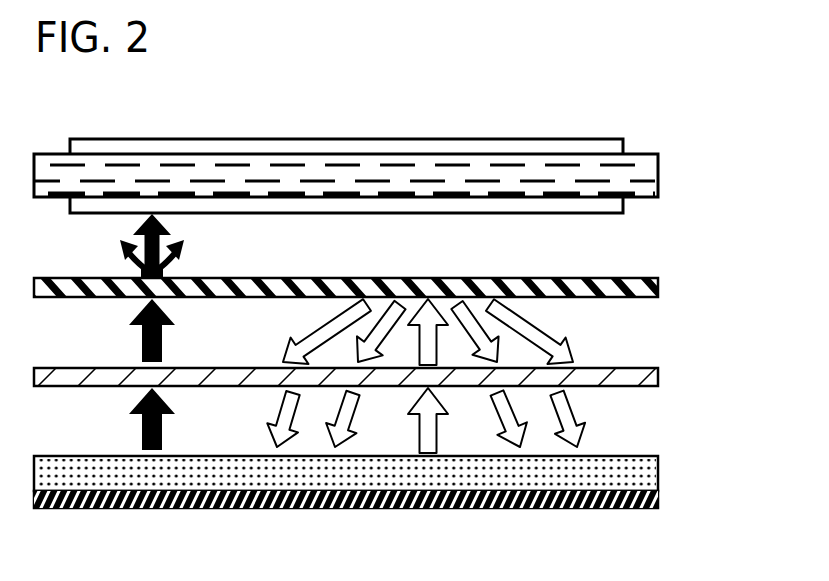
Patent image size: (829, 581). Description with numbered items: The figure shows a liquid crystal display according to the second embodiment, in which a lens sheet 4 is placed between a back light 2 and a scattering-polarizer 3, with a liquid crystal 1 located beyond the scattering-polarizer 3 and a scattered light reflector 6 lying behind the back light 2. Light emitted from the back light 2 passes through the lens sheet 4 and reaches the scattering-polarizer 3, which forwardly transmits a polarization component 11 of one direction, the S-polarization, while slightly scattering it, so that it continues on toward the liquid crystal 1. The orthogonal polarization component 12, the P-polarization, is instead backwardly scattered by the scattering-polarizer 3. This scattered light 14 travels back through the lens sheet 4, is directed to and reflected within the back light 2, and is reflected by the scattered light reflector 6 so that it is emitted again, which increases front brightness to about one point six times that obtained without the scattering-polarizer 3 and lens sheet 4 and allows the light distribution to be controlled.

The liquid crystal 1 is at (650, 173).
The back light 2 is at (655, 474).
The scattering-polarizer 3 is at (655, 290).
The lens sheet 4 is at (655, 378).
The scattered light reflector 6 is at (655, 500).
The polarization component 11 is at (152, 450).
The polarization component 12 is at (428, 453).
The light scattered by scattering-polarizer 14 is at (540, 334).